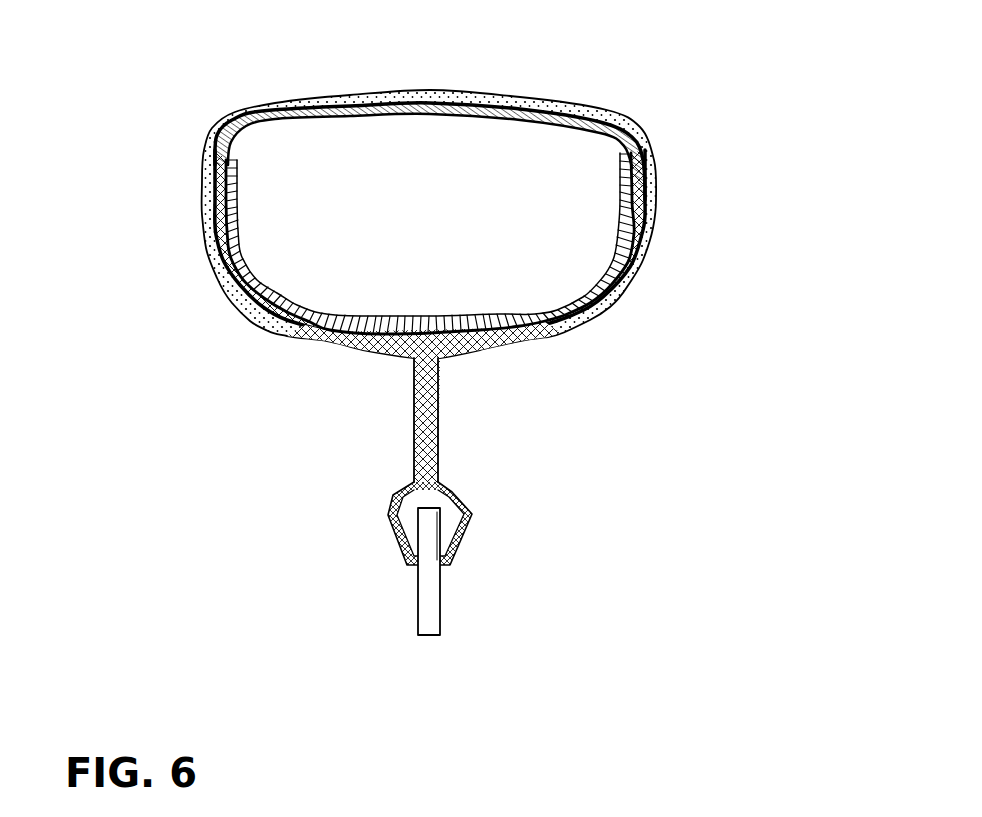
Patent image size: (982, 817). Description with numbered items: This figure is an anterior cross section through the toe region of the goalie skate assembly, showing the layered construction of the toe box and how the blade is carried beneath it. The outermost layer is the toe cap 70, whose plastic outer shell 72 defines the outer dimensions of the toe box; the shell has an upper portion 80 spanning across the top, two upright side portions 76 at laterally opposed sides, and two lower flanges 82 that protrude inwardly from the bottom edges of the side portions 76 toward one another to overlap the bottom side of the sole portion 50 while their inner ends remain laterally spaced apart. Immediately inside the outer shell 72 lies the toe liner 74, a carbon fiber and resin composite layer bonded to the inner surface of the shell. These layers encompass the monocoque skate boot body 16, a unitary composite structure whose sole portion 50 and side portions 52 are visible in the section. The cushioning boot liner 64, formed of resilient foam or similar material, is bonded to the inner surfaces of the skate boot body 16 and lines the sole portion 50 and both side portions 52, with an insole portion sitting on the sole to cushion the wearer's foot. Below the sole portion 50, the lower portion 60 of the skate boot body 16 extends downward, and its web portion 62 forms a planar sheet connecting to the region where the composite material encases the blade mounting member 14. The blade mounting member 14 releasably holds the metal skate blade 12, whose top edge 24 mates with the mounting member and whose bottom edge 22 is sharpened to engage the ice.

The skate blade 12 is at (432, 623).
The blade mounting member 14 is at (450, 520).
The skate boot body 16 is at (468, 362).
The bottom edge 22 is at (423, 640).
The top edge 24 is at (433, 510).
The sole portion 50 is at (352, 337).
The side portions 52 is at (216, 229).
The lower portion 60 is at (390, 515).
The web portion 62 is at (420, 435).
The cushioning boot liner 64 is at (239, 216).
The toe cap 70 is at (437, 80).
The outer shell 72 is at (518, 104).
The toe liner 74 is at (371, 121).
The side portions 76 is at (201, 182).
The upper portion 80 is at (337, 91).
The lower flanges 82 is at (283, 337).